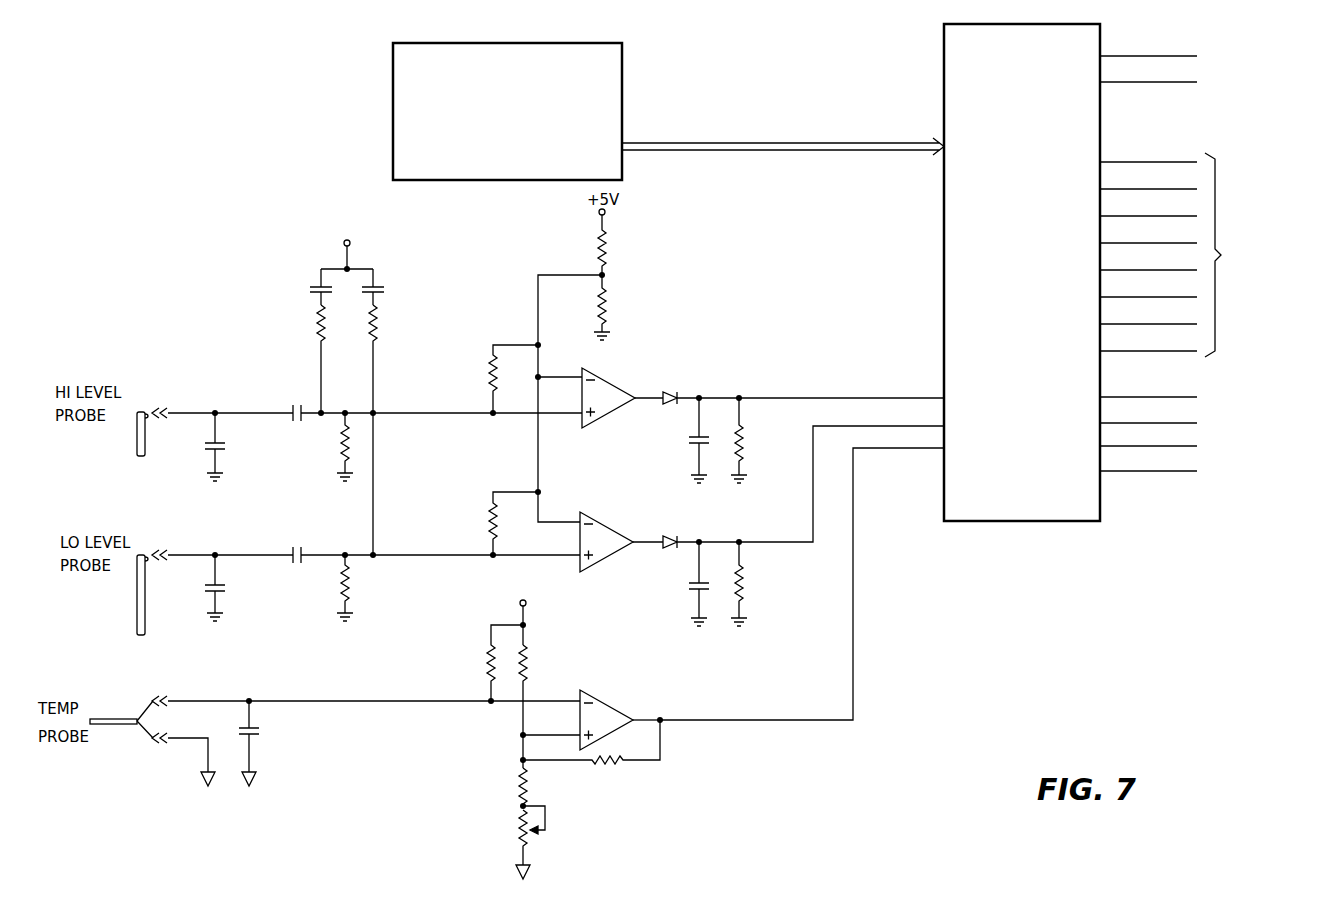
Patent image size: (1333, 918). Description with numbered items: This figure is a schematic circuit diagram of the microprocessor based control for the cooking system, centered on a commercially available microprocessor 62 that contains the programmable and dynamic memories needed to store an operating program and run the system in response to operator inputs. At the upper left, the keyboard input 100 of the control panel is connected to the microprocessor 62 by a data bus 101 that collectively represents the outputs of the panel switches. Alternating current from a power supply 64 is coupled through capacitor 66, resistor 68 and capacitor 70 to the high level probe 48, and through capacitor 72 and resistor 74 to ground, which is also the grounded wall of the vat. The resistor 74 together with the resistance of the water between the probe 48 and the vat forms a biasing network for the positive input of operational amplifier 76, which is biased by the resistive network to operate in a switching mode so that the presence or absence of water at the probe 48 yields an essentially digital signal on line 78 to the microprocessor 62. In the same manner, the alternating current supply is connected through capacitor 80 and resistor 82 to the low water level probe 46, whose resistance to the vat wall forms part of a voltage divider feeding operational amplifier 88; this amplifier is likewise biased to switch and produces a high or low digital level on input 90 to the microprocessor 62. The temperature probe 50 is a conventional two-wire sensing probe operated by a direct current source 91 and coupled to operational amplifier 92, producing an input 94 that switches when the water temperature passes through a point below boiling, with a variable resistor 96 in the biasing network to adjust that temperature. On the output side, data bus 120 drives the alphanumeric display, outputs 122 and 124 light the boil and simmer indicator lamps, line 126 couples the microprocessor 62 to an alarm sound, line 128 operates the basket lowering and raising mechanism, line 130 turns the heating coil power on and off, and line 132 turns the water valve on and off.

The low water level probe 46 is at (137, 607).
The high level probe 48 is at (137, 445).
The temperature probe 50 is at (113, 725).
The microprocessor 62 is at (1034, 273).
The power supply 64 is at (344, 246).
The capacitor 66 is at (313, 284).
The resistor 68 is at (316, 320).
The capacitor 70 is at (295, 404).
The capacitor 72 is at (225, 446).
The resistor 74 is at (340, 449).
The operational amplifier 76 is at (604, 378).
The line 78 is at (835, 398).
The capacitor 80 is at (380, 282).
The resistor 82 is at (378, 322).
The operational amplifier 88 is at (600, 565).
The input 90 is at (906, 426).
The direct current source 91 is at (526, 607).
The operational amplifier 92 is at (605, 700).
The input 94 is at (922, 448).
The variable resistor 96 is at (531, 873).
The keyboard input 100 is at (393, 123).
The data bus 101 is at (770, 152).
The data bus 120 is at (1222, 204).
The boil output 122 is at (1128, 55).
The simmer output 124 is at (1123, 84).
The line 126 is at (1128, 397).
The line 128 is at (1135, 423).
The line 130 is at (1140, 446).
The line 132 is at (1144, 471).